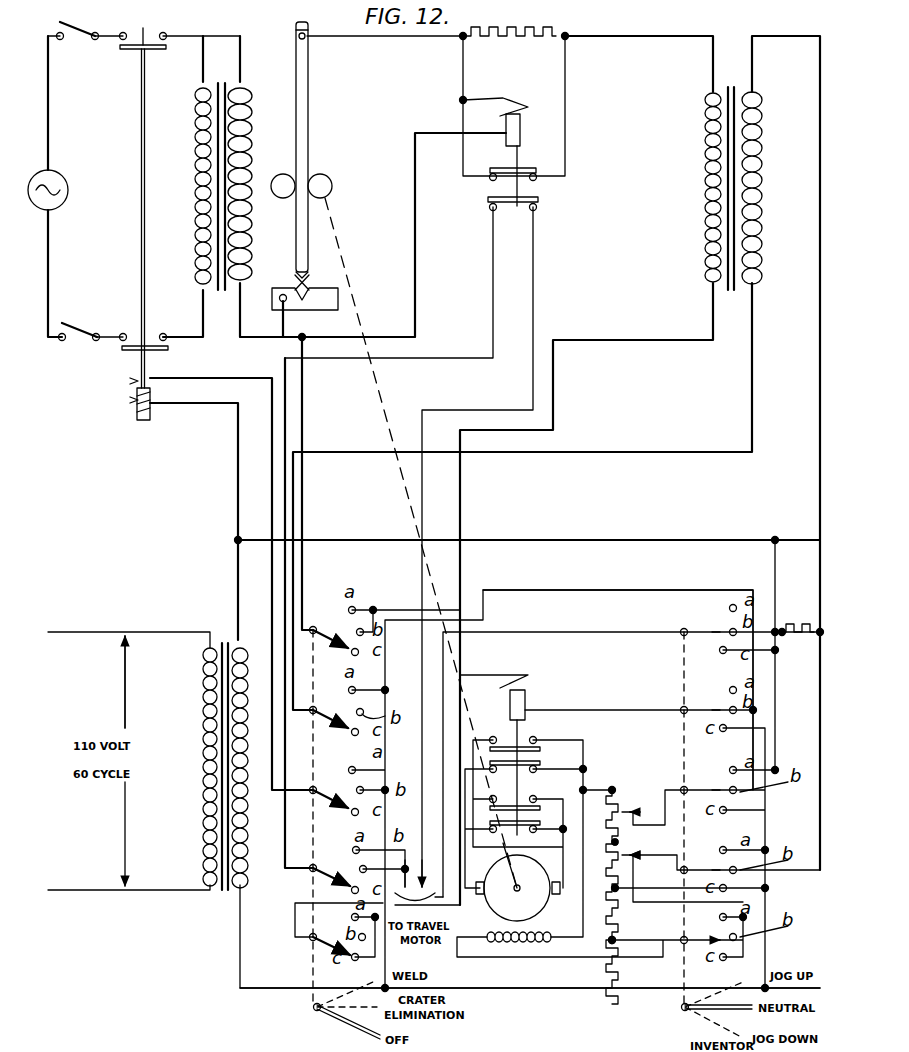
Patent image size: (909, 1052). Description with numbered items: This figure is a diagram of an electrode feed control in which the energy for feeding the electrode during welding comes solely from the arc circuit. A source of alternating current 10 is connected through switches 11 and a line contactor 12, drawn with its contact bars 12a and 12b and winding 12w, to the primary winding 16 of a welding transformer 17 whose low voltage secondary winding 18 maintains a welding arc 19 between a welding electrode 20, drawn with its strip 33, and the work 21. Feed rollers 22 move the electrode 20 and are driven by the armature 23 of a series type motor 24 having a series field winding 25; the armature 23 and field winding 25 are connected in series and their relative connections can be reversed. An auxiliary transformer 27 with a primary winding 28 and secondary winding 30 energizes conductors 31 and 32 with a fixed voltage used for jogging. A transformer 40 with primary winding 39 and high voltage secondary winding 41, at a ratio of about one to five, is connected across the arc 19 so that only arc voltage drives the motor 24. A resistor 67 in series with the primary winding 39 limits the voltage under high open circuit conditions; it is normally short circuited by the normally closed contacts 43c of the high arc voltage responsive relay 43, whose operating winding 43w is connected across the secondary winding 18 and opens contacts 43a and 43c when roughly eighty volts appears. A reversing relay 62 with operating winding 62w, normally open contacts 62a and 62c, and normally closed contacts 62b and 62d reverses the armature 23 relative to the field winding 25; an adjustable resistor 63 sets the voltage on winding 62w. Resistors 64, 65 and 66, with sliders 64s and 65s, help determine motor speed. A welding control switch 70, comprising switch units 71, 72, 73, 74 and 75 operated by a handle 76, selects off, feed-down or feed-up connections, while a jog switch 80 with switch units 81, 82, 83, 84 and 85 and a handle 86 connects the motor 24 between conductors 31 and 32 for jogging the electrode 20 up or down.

The source of alternating current 10 is at (68, 184).
The switches 11 is at (73, 42).
The line contactor 12 is at (155, 283).
The contactor upper contact bar 12a is at (143, 28).
The contactor lower contact bar 12b is at (156, 332).
The contactor winding 12w is at (152, 398).
The primary winding 16 is at (196, 164).
The welding transformer 17 is at (225, 42).
The low voltage secondary winding 18 is at (252, 120).
The welding arc 19 is at (296, 282).
The welding electrode 20 is at (309, 122).
The work 21 is at (272, 304).
The feed rollers 22 is at (292, 178).
The armature 23 is at (548, 897).
The series type motor 24 is at (485, 896).
The series field winding 25 is at (498, 940).
The auxiliary transformer 27 is at (222, 623).
The primary winding 28 is at (202, 677).
The secondary winding 30 is at (246, 680).
The conductor 31 is at (388, 337).
The conductor 32 is at (522, 988).
The electrode strip 33 is at (318, 18).
The primary winding 39 is at (704, 140).
The transformer 40 is at (732, 75).
The high voltage secondary winding 41 is at (763, 124).
The high arc voltage responsive relay 43 is at (525, 100).
The contacts 43a is at (520, 212).
The normally closed contacts 43c is at (528, 180).
The operating winding 43w is at (520, 125).
The reversing relay 62 is at (540, 672).
The normally open contacts 62a is at (538, 738).
The normally closed contacts 62b is at (536, 772).
The normally open contacts 62c is at (497, 792).
The normally closed contacts 62d is at (528, 834).
The operating winding 62w is at (528, 697).
The adjustable resistor 63 is at (792, 640).
The resistor 64 is at (624, 896).
The slider 64s is at (630, 820).
The resistor 65 is at (628, 836).
The slider 65s is at (630, 862).
The resistor 66 is at (627, 927).
The resistor 67 is at (515, 30).
The welding control switch 70 is at (372, 603).
The switch unit 71 is at (330, 618).
The switch unit 72 is at (332, 700).
The switch unit 73 is at (333, 780).
The switch unit 74 is at (333, 858).
The switch unit 75 is at (336, 930).
The handle 76 is at (345, 1022).
The jog switch 80 is at (706, 592).
The switch unit 81 is at (710, 620).
The switch unit 82 is at (710, 690).
The switch unit 83 is at (706, 772).
The switch unit 84 is at (712, 860).
The switch unit 85 is at (712, 932).
The handle 86 is at (712, 1012).